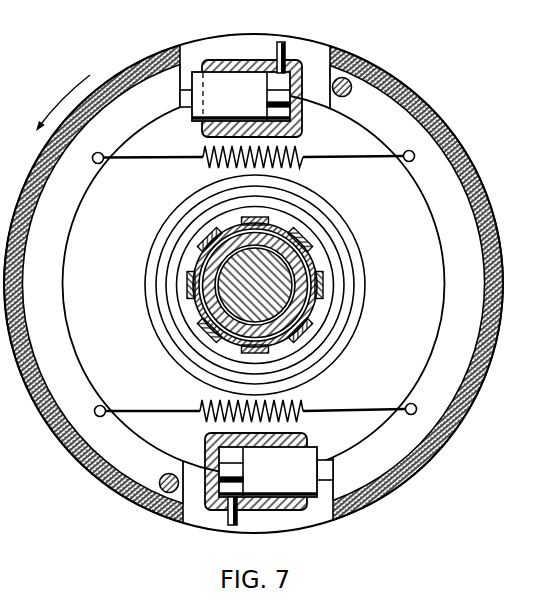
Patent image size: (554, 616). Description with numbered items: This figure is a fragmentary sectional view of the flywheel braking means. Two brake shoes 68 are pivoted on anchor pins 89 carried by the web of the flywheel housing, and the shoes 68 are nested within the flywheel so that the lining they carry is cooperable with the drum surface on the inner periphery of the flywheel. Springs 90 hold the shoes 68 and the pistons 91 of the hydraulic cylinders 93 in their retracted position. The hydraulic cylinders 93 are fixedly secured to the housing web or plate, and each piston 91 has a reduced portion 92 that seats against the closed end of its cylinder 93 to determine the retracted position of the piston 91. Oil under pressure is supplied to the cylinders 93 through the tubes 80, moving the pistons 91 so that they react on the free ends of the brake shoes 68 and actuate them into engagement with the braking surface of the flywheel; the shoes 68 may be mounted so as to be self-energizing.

The brake shoes 68 is at (253, 284).
The tubes 80 is at (277, 52).
The anchor pins 89 is at (349, 96).
The springs 90 is at (300, 168).
The pistons 91 is at (256, 284).
The reduced portions 92 is at (281, 104).
The hydraulic cylinders 93 is at (221, 62).